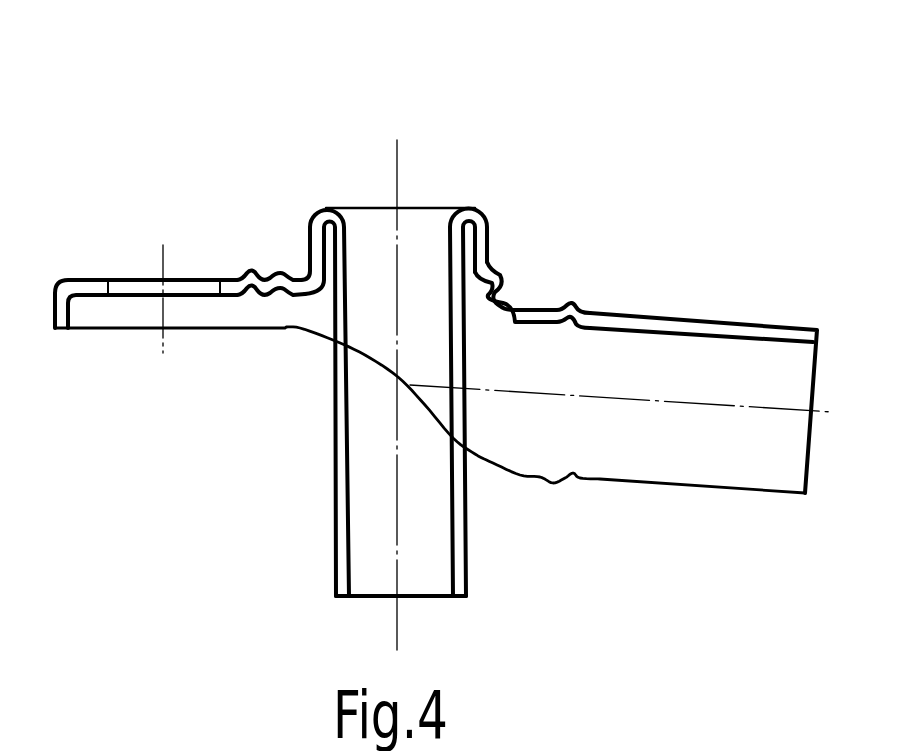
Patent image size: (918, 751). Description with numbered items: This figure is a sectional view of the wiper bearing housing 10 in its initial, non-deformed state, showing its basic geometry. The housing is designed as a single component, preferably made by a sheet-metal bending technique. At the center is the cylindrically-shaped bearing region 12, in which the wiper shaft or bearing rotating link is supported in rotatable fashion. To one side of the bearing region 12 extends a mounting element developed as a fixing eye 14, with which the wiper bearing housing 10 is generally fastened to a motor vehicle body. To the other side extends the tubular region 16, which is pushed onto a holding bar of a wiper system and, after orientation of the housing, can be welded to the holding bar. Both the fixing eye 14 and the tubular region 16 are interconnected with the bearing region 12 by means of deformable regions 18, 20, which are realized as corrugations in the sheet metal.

The wiper bearing housing 10 is at (698, 157).
The bearing region 12 is at (470, 203).
The fixing eye 14 is at (77, 282).
The tubular region 16 is at (767, 322).
The deformable region 18 is at (255, 275).
The deformable region 20 is at (565, 305).